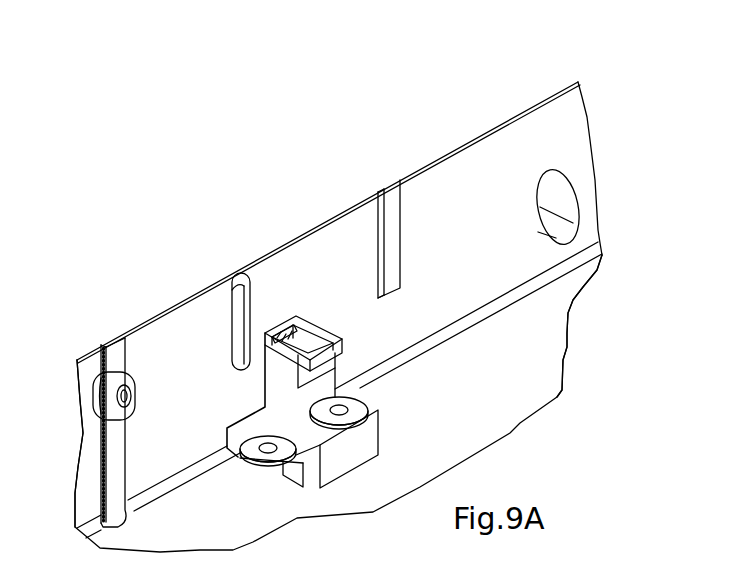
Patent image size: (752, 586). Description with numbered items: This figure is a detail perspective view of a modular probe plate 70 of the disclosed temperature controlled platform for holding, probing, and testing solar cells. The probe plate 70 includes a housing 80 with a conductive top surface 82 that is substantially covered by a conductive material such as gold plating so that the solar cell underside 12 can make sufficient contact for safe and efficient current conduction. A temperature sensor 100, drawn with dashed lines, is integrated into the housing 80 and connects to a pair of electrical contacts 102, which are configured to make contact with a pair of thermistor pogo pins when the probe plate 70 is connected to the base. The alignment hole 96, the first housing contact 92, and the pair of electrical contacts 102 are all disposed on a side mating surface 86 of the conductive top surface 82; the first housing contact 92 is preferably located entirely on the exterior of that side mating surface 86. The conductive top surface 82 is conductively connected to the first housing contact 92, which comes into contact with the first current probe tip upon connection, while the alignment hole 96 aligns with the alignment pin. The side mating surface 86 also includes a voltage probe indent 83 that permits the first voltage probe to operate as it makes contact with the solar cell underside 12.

The solar cell underside 12 is at (77, 360).
The probe plate 70 is at (516, 435).
The housing 80 is at (566, 348).
The conductive top surface 82 is at (560, 130).
The voltage probe indent 83 is at (117, 467).
The side mating surface 86 is at (503, 153).
The first housing contact 92 is at (392, 228).
The alignment hole 96 is at (563, 197).
The temperature sensor 100 is at (320, 324).
The electrical contacts 102 is at (286, 318).